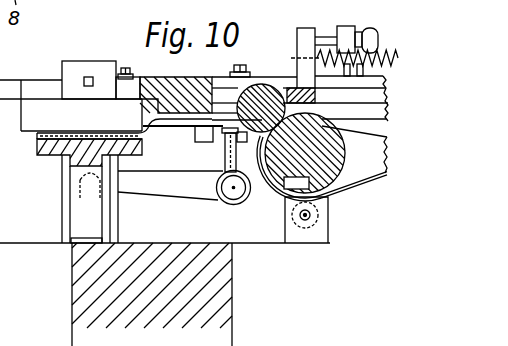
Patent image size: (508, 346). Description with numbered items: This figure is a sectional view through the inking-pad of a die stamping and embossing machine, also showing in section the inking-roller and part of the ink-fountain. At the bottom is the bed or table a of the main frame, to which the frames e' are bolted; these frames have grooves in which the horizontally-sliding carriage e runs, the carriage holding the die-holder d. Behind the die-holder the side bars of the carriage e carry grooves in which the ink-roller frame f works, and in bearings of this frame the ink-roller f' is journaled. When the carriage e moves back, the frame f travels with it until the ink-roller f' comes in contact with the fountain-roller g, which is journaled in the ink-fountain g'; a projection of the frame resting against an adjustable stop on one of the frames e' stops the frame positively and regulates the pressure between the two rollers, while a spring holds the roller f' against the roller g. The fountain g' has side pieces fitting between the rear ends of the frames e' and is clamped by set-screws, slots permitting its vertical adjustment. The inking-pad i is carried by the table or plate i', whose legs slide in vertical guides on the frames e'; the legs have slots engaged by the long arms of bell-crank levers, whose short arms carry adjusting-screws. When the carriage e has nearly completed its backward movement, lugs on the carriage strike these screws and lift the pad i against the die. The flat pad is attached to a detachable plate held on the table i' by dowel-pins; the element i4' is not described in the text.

The bed or table a is at (139, 294).
The die-holder d is at (71, 96).
The horizontally-sliding carriage e is at (195, 83).
The frames e' is at (165, 228).
The ink-roller frame f is at (308, 98).
The ink-roller f' is at (261, 93).
The fountain-roller g is at (326, 153).
The ink-fountain g' is at (322, 170).
The inking-pad i is at (131, 140).
The table or plate i' is at (91, 160).
The link i4' is at (219, 150).